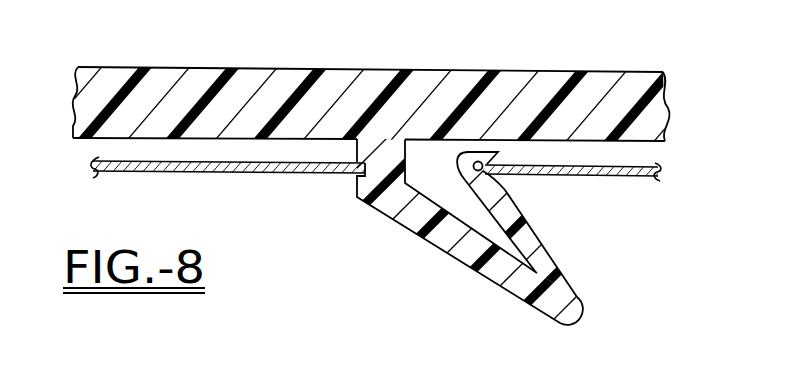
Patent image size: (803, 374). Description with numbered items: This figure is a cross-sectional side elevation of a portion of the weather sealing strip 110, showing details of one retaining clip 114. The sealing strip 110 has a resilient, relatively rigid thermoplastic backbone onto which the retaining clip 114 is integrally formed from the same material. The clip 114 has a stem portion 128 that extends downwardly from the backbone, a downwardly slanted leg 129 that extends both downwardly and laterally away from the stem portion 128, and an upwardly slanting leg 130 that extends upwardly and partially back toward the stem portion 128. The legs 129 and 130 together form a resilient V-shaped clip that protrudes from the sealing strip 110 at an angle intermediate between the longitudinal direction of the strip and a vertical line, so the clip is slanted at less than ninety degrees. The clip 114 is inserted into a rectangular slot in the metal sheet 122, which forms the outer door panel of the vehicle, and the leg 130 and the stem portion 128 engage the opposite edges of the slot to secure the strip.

The weather sealing strip 110 is at (390, 69).
The retaining clip 114 is at (448, 262).
The metal sheet 122 is at (315, 174).
The stem portion 128 is at (379, 172).
The downwardly slanted leg 129 is at (433, 242).
The upwardly slanting leg 130 is at (537, 236).